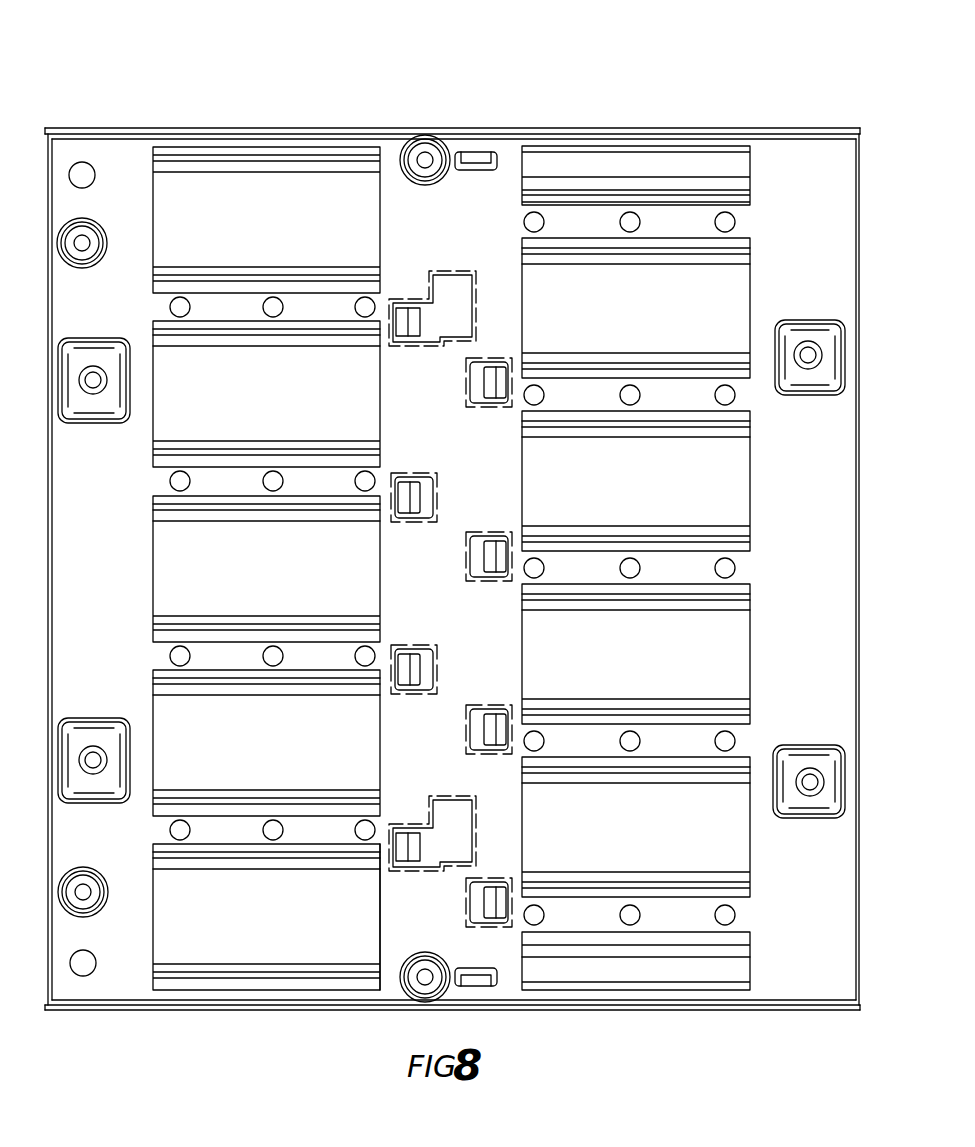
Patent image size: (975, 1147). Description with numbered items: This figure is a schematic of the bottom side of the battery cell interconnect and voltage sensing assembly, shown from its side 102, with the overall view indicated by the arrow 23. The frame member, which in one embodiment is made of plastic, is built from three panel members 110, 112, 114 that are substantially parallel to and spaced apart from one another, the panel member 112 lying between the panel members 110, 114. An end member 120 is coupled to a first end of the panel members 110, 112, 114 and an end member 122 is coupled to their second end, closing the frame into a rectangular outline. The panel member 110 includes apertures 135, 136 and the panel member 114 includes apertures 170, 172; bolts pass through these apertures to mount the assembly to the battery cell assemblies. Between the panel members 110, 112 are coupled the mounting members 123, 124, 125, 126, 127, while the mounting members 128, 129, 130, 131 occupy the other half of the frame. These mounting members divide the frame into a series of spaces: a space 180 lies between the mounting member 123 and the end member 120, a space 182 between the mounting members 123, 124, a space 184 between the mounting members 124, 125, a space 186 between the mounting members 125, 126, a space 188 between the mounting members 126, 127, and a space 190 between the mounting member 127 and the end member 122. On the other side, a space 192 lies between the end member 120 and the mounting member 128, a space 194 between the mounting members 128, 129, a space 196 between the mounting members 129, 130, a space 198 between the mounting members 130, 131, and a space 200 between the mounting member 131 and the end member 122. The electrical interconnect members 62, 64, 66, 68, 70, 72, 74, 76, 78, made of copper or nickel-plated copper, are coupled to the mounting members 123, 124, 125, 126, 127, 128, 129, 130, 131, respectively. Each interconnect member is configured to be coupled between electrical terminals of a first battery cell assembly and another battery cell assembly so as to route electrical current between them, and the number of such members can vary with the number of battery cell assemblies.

The battery module assembly 23 is at (680, 100).
The electrical interconnect member 62 is at (594, 955).
The electrical interconnect member 64 is at (540, 785).
The electrical interconnect member 66 is at (538, 612).
The electrical interconnect member 68 is at (535, 439).
The electrical interconnect member 70 is at (535, 266).
The electrical interconnect member 72 is at (258, 868).
The electrical interconnect member 74 is at (203, 697).
The electrical interconnect member 76 is at (203, 523).
The electrical interconnect member 78 is at (188, 350).
The side 102 is at (465, 589).
The panel member 110 is at (857, 947).
The panel member 112 is at (382, 930).
The panel member 114 is at (55, 968).
The end member 120 is at (505, 990).
The end member 122 is at (466, 142).
The mounting member 123 is at (690, 915).
The mounting member 124 is at (690, 742).
The mounting member 125 is at (690, 565).
The mounting member 126 is at (690, 387).
The mounting member 127 is at (692, 215).
The mounting member 128 is at (330, 832).
The mounting member 129 is at (330, 659).
The mounting member 130 is at (330, 484).
The mounting member 131 is at (330, 312).
The aperture 135 is at (818, 782).
The aperture 136 is at (814, 356).
The aperture 170 is at (83, 885).
The aperture 172 is at (93, 372).
The space 180 is at (636, 961).
The space 182 is at (636, 827).
The space 184 is at (636, 654).
The space 186 is at (636, 481).
The space 188 is at (636, 308).
The space 190 is at (620, 179).
The space 192 is at (267, 917).
The space 194 is at (266, 743).
The space 196 is at (266, 569).
The space 198 is at (266, 394).
The space 200 is at (273, 236).